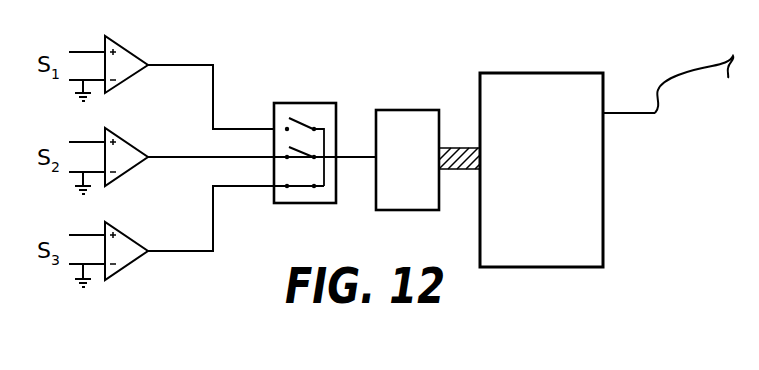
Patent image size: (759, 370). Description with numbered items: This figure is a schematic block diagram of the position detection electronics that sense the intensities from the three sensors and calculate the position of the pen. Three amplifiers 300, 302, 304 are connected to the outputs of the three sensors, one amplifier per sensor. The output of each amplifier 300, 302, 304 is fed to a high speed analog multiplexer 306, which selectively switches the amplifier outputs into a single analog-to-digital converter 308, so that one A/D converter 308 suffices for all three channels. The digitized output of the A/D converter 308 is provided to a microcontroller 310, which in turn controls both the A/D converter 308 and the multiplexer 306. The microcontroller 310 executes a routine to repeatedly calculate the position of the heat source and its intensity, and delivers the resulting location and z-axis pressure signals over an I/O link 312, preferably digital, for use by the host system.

The amplifier 300 is at (128, 51).
The amplifier 302 is at (128, 144).
The amplifier 304 is at (128, 238).
The high speed analog multiplexer 306 is at (293, 103).
The analog-to-digital (A/D) converter 308 is at (400, 110).
The microcontroller 310 is at (531, 73).
The I/O link 312 is at (646, 113).